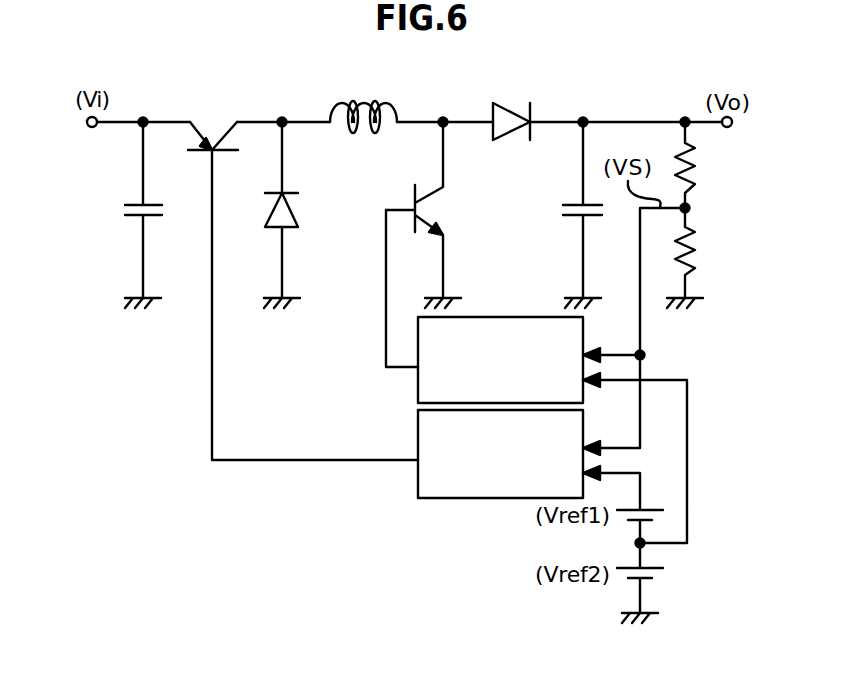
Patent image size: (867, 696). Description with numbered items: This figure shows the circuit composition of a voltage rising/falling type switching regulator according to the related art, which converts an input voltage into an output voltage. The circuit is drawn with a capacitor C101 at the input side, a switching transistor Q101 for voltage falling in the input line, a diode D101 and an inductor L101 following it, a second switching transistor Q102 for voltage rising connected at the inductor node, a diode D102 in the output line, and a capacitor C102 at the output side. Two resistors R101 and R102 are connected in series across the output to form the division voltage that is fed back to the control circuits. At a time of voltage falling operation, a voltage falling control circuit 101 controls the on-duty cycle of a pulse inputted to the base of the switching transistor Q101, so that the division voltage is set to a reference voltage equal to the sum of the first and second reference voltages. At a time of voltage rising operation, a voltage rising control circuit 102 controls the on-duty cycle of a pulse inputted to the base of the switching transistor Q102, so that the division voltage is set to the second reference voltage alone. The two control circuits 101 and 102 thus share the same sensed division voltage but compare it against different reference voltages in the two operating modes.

The voltage falling control circuit 101 is at (418, 470).
The voltage rising control circuit 102 is at (418, 380).
The switching transistor for voltage falling Q101 is at (212, 122).
The switching transistor for voltage rising Q102 is at (443, 215).
The input capacitor C101 is at (124, 215).
The output capacitor C102 is at (563, 215).
The diode D101 is at (307, 215).
The diode D102 is at (513, 104).
The inductor L101 is at (363, 100).
The resistor R101 is at (716, 165).
The resistor R102 is at (712, 258).